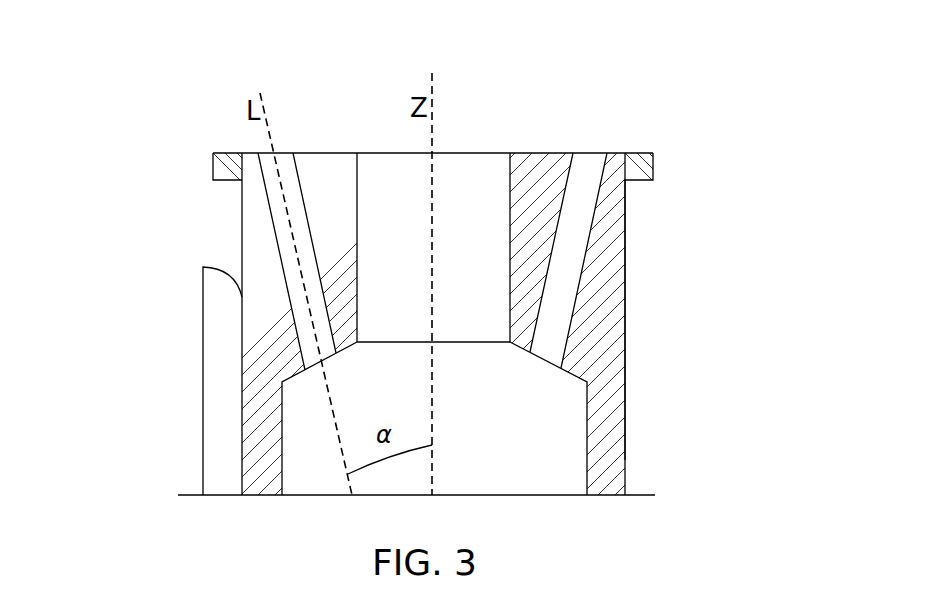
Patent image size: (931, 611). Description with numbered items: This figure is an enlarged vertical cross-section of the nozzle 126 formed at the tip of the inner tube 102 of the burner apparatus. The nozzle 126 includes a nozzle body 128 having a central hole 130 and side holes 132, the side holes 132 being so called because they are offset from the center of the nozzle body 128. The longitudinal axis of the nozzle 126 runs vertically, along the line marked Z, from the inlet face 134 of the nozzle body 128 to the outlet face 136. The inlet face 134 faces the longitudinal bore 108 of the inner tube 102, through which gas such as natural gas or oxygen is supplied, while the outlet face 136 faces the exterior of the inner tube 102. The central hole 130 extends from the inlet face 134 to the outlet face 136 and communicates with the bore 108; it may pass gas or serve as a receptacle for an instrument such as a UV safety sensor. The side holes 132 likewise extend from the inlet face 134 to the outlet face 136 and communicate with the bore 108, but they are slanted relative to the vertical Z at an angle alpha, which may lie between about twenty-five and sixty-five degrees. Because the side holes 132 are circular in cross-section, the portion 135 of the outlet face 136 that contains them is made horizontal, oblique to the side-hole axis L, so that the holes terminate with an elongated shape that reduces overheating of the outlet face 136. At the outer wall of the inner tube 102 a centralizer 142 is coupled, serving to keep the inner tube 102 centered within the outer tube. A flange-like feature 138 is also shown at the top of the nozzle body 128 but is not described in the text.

The inner tube 102 is at (625, 460).
The longitudinal bore 108 is at (497, 477).
The nozzle 126 is at (605, 143).
The nozzle body 128 is at (625, 223).
The central hole 130 is at (493, 263).
The side holes 132 is at (665, 278).
The inlet face 134 is at (466, 344).
The portion of the outlet face 135 is at (324, 153).
The outlet face 136 is at (480, 153).
The flange 138 is at (712, 167).
The centralizer 142 is at (218, 356).